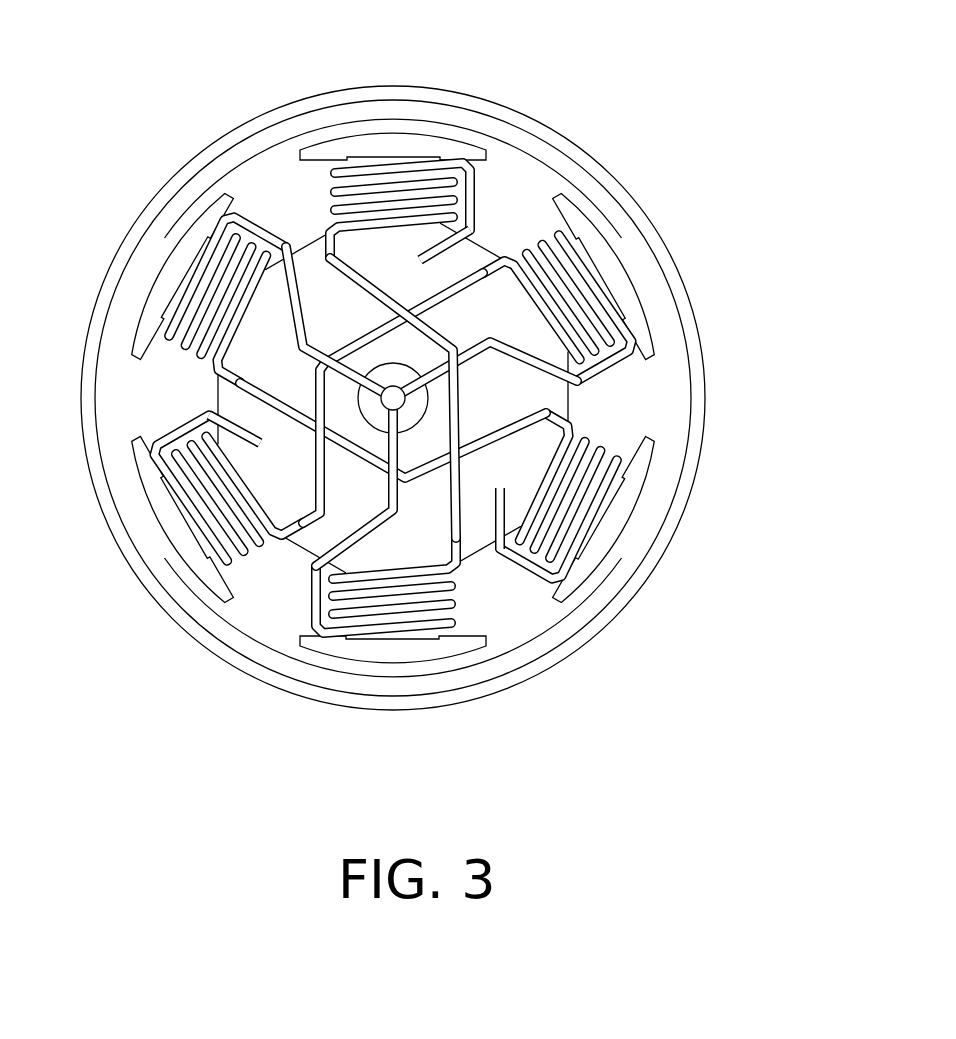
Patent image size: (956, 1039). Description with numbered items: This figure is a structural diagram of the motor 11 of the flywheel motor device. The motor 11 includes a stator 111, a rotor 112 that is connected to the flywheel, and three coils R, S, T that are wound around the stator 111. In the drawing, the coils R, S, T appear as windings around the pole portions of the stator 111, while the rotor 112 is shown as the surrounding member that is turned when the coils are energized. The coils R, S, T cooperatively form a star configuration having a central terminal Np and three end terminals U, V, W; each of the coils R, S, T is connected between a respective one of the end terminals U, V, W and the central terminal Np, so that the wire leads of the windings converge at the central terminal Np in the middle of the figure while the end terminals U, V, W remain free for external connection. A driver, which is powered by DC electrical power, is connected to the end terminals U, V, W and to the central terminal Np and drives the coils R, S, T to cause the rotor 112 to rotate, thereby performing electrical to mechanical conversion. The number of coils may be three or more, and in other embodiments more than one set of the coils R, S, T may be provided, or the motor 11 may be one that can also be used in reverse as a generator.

The motor 11 is at (697, 314).
The stator 111 is at (553, 395).
The rotor 112 is at (699, 408).
The coil R is at (394, 172).
The coil S is at (598, 284).
The coil T is at (597, 514).
The end terminal U is at (431, 253).
The end terminal V is at (246, 447).
The end terminal W is at (500, 507).
The central terminal Np is at (395, 389).